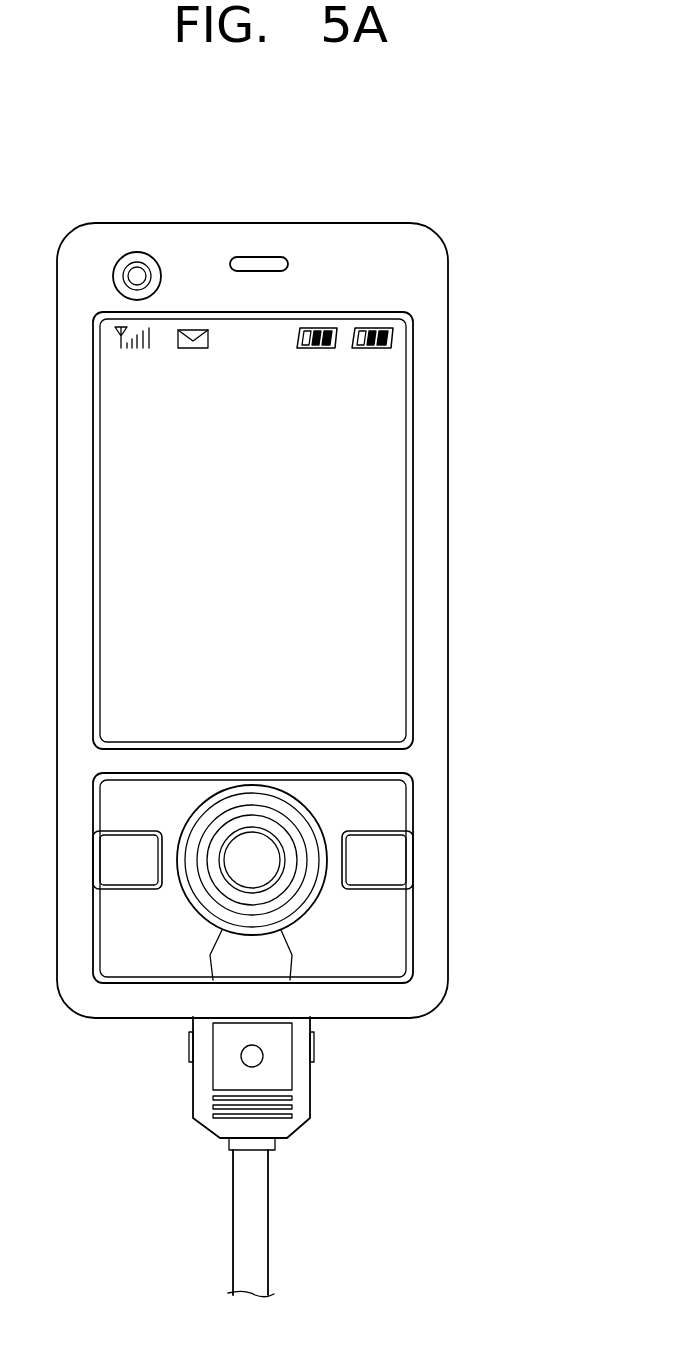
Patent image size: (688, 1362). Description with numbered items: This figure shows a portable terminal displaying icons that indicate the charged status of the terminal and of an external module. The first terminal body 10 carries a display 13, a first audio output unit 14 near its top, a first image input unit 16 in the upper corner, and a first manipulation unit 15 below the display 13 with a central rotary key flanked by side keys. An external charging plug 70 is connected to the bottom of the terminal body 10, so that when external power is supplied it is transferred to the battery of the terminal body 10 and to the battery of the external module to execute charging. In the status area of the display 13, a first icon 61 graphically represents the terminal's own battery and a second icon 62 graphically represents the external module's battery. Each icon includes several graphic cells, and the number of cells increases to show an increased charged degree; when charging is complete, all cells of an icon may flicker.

The first terminal body 10 is at (448, 391).
The display 13 is at (375, 565).
The first audio output unit 14 is at (264, 258).
The first manipulation unit 15 is at (423, 773).
The first image input unit 16 is at (137, 278).
The first icon 61 is at (370, 330).
The second icon 62 is at (320, 330).
The external charging plug 70 is at (310, 1090).